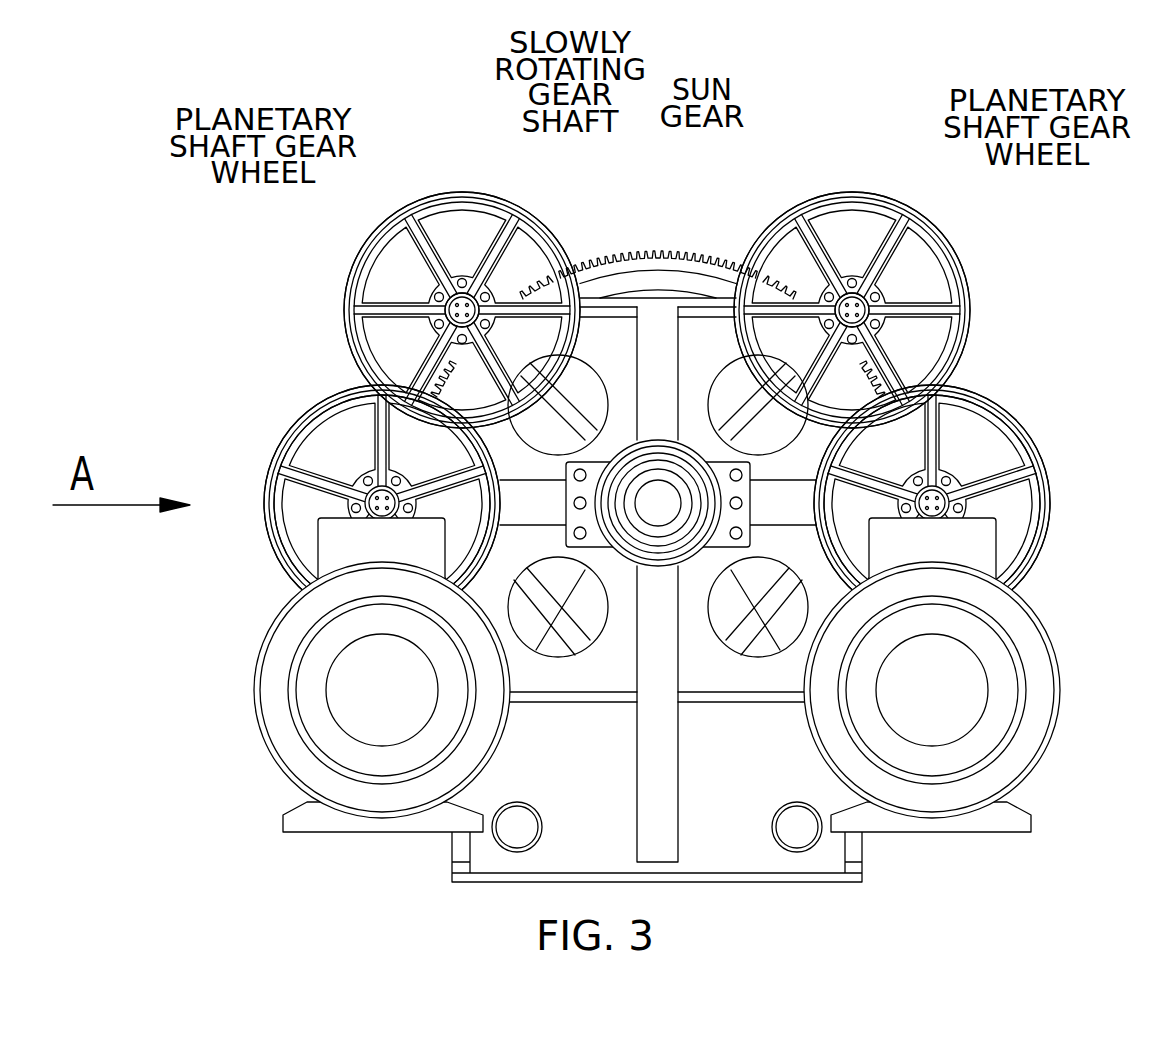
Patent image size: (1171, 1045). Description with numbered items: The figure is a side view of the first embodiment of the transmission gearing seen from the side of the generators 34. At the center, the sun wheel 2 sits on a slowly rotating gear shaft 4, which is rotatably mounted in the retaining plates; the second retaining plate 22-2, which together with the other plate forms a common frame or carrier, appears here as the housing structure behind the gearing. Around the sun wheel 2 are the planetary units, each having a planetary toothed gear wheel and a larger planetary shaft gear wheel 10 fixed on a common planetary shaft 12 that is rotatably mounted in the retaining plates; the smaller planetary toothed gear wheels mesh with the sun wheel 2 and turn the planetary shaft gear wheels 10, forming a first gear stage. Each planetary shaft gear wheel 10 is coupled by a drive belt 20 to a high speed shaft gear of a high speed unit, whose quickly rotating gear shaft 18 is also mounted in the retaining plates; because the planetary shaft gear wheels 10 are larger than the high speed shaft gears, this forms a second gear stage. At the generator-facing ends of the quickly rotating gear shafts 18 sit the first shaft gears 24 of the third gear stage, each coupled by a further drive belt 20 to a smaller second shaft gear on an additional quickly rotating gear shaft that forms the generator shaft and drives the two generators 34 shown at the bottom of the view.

The sun wheel 2 is at (665, 260).
The slowly rotating gear shaft 4 is at (656, 502).
The planetary shaft gear wheel 10 is at (372, 270).
The planetary shaft 12 is at (461, 300).
The quickly rotating gear shaft 18 is at (292, 443).
The drive belt 20 is at (345, 355).
The first shaft gear 24 is at (285, 497).
The second retaining plate 22-2 is at (657, 590).
The generator 34 is at (657, 668).